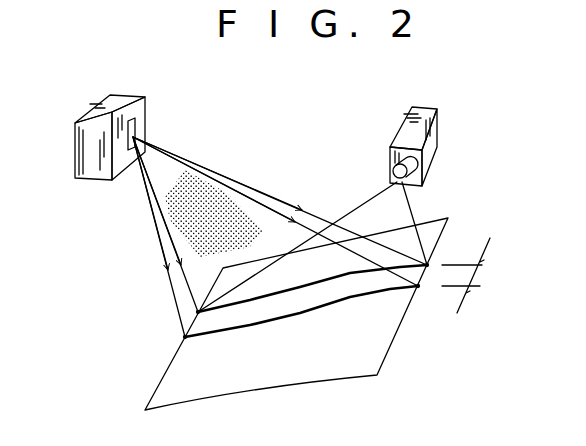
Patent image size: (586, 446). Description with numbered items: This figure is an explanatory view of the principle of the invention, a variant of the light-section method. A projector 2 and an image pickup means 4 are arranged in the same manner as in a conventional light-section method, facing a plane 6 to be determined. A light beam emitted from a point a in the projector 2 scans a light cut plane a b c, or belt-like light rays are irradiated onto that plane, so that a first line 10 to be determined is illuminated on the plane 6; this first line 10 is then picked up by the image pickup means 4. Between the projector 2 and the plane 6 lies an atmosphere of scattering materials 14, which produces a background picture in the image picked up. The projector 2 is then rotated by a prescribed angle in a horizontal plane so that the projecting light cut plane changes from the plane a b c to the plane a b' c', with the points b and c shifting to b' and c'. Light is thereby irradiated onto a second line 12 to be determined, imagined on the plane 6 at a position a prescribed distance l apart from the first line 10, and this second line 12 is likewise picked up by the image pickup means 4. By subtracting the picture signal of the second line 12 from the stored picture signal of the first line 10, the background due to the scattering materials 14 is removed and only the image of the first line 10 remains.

The projector 2 is at (75, 163).
The image pickup means 4 is at (435, 153).
The plane to be determined 6 is at (378, 340).
The first line to be determined 10 is at (333, 277).
The second line to be determined 12 is at (298, 312).
The scattering materials 14 is at (227, 213).
The point of light emission a is at (138, 131).
The corner point of plane a b c b is at (199, 295).
The corner point of plane a b' c' b' is at (173, 333).
The corner point of plane a b c is at (435, 264).
The corner point of plane a b' c' is at (428, 287).
The prescribed distance l is at (466, 275).